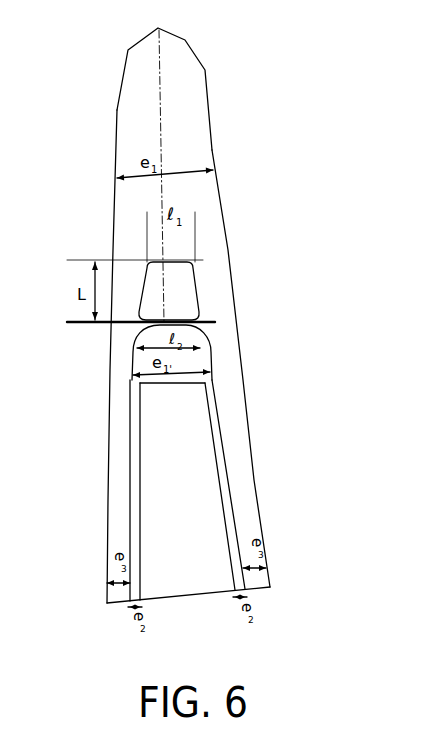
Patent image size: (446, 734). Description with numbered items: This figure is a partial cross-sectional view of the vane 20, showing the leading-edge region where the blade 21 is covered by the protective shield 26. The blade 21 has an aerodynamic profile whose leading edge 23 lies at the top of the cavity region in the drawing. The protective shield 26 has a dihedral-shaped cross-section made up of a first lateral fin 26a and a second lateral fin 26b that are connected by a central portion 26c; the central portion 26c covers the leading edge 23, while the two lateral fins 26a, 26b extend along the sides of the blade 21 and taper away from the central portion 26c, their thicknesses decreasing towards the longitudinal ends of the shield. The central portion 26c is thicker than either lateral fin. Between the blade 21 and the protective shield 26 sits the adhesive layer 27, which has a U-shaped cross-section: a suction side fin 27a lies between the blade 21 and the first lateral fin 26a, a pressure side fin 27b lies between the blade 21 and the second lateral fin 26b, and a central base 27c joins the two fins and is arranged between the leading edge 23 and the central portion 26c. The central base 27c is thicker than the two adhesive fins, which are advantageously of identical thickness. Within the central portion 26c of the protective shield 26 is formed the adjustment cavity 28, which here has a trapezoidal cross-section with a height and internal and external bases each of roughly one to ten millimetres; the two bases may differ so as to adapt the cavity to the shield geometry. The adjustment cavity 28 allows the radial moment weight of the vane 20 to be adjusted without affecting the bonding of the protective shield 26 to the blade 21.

The vane 20 is at (229, 315).
The blade 21 is at (181, 487).
The leading edge 23 is at (152, 382).
The protective shield 26 is at (182, 315).
The first lateral fin 26a is at (112, 448).
The second lateral fin 26b is at (228, 398).
The central portion 26c is at (200, 138).
The adhesive layer 27 is at (200, 463).
The suction side fin 27a is at (132, 512).
The pressure side fin 27b is at (235, 520).
The central base 27c is at (210, 362).
The adjustment cavity 28 is at (188, 295).